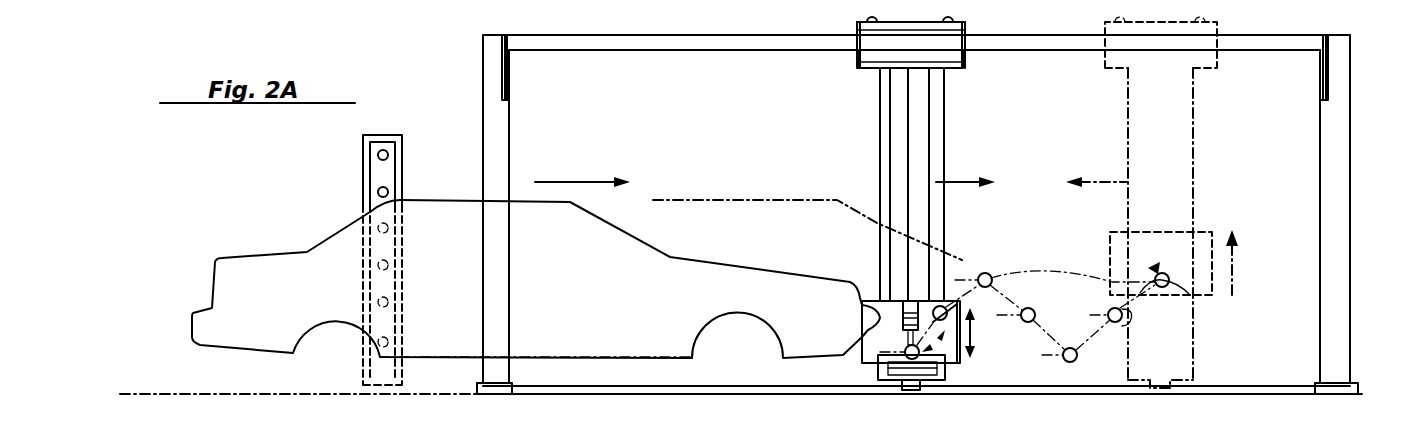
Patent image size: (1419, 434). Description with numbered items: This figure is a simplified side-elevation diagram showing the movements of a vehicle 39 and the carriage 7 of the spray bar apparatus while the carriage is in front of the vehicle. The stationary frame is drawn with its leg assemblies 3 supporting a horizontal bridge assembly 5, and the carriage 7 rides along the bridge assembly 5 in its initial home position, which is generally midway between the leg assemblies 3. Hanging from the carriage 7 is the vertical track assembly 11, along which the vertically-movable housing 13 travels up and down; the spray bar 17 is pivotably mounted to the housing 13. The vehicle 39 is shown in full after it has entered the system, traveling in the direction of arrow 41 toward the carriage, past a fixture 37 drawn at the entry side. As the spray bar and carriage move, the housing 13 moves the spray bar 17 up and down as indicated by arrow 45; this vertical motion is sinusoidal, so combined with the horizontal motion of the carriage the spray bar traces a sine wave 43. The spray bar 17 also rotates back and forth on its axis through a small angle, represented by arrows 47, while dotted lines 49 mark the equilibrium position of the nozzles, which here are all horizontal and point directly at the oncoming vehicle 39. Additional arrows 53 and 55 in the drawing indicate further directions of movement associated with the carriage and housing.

The leg assemblies 3 is at (1338, 203).
The bridge assembly 5 is at (694, 45).
The carriage 7 is at (870, 60).
The vertical track assembly 11 is at (937, 148).
The vertically-movable housing 13 is at (947, 357).
The spray bar 17 is at (907, 385).
The reference fixture rack 37 is at (383, 173).
The vehicle 39 is at (608, 303).
The arrow 41 is at (567, 182).
The sine wave 43 is at (1055, 327).
The arrow 45 is at (972, 333).
The arrows 47 is at (930, 378).
The dotted lines 49 is at (878, 368).
The upward movement arrow 53 is at (1234, 278).
The return direction arrow 55 is at (1107, 182).